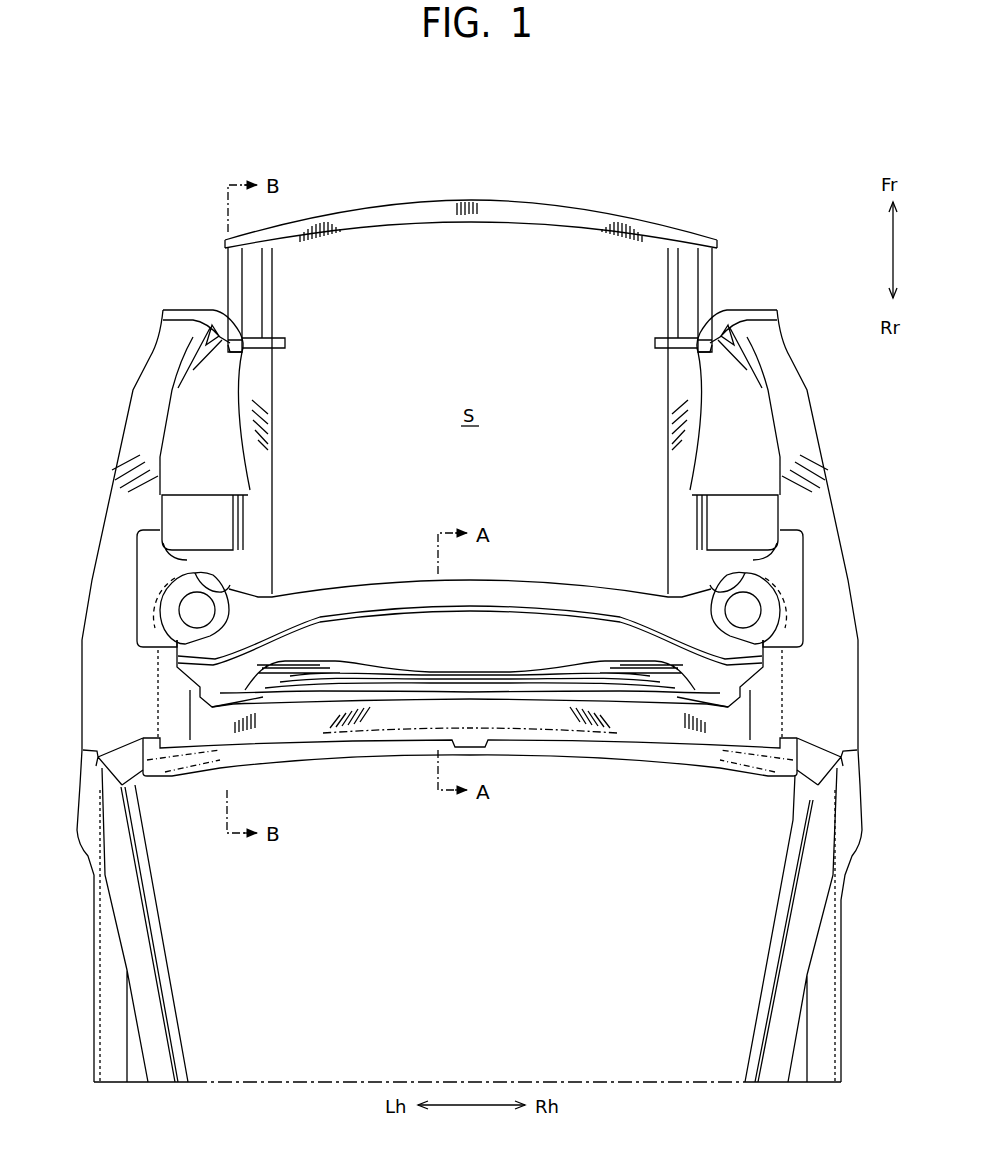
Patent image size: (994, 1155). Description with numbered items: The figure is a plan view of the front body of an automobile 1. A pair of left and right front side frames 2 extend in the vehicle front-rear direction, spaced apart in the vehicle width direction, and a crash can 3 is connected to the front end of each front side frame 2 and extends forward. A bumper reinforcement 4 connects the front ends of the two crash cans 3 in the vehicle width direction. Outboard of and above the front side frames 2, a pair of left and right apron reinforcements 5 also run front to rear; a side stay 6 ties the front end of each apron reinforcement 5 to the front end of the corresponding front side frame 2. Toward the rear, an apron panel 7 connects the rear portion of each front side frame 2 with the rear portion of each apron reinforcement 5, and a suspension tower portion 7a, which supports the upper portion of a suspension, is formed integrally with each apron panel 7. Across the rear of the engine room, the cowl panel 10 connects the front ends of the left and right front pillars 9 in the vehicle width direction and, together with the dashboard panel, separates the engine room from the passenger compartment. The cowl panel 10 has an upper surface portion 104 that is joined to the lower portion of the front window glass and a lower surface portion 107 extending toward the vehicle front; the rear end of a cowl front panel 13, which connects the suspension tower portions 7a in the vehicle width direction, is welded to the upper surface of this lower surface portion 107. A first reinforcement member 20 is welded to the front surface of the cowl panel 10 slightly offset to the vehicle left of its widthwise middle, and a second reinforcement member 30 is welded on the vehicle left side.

The automobile 1 is at (90, 205).
The front side frame 2 is at (278, 393).
The crash can 3 is at (276, 284).
The bumper reinforcement 4 is at (533, 203).
The apron reinforcement 5 is at (119, 433).
The side stay 6 is at (183, 309).
The apron panel 7 is at (205, 492).
The suspension tower portion 7a is at (252, 566).
The front pillar 9 is at (179, 990).
The cowl panel 10 is at (318, 752).
The cowl front panel 13 is at (516, 580).
The first reinforcement member 20 is at (444, 694).
The second reinforcement member 30 is at (218, 731).
The upper surface portion 104 is at (533, 722).
The lower surface portion 107 is at (748, 735).